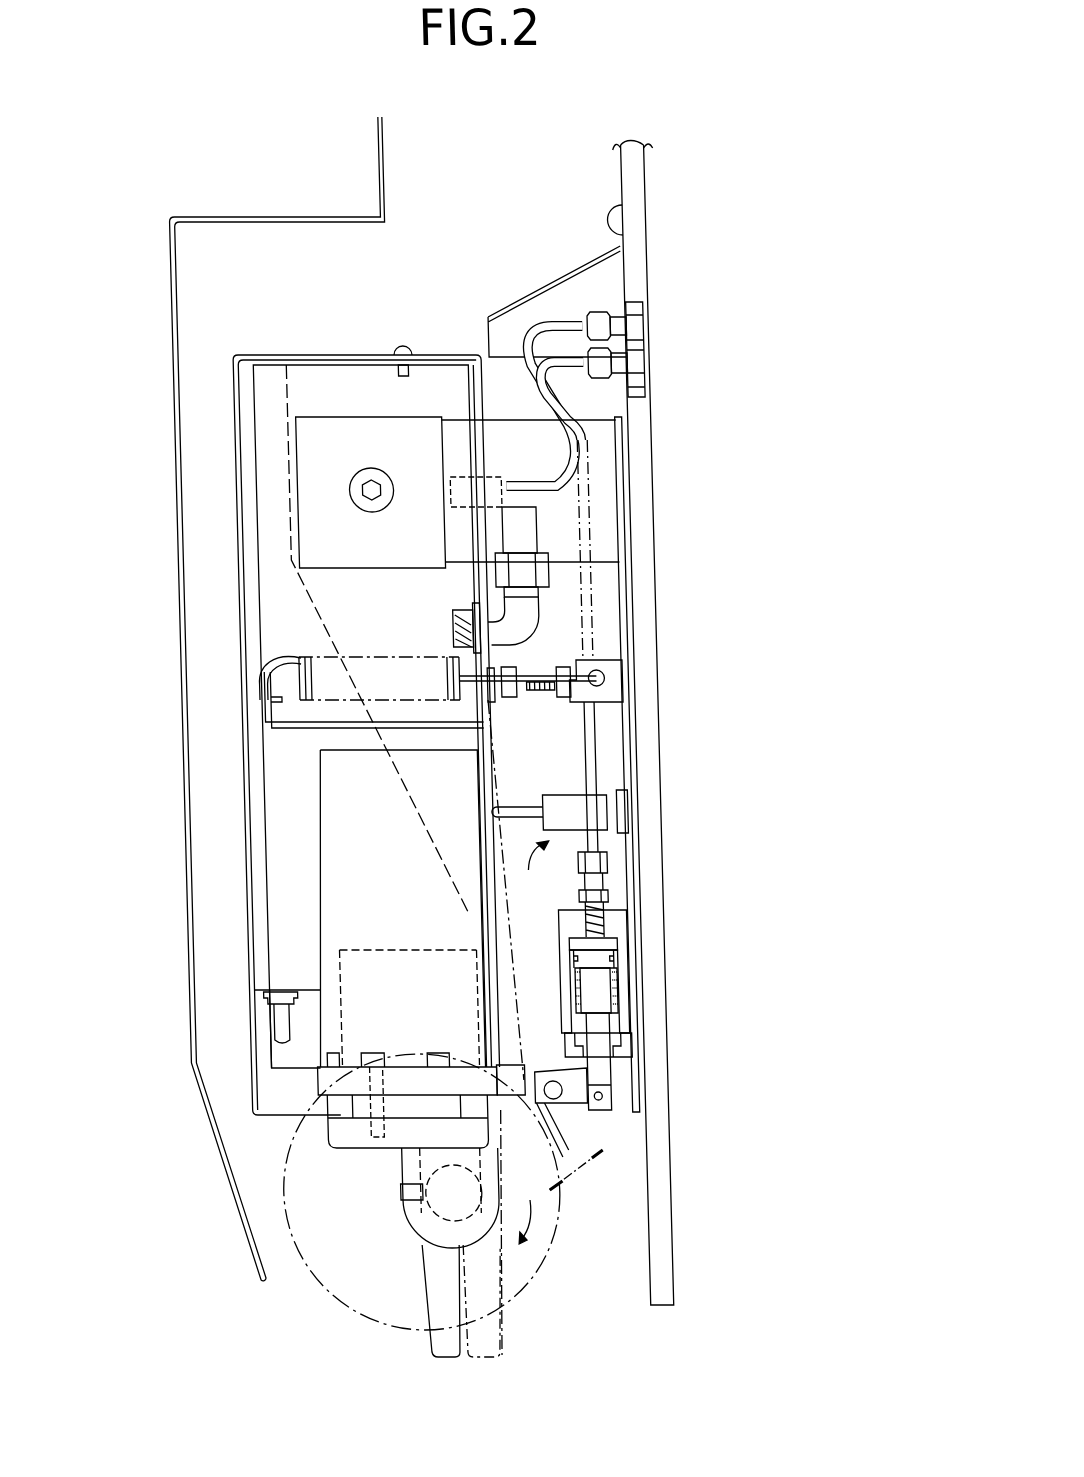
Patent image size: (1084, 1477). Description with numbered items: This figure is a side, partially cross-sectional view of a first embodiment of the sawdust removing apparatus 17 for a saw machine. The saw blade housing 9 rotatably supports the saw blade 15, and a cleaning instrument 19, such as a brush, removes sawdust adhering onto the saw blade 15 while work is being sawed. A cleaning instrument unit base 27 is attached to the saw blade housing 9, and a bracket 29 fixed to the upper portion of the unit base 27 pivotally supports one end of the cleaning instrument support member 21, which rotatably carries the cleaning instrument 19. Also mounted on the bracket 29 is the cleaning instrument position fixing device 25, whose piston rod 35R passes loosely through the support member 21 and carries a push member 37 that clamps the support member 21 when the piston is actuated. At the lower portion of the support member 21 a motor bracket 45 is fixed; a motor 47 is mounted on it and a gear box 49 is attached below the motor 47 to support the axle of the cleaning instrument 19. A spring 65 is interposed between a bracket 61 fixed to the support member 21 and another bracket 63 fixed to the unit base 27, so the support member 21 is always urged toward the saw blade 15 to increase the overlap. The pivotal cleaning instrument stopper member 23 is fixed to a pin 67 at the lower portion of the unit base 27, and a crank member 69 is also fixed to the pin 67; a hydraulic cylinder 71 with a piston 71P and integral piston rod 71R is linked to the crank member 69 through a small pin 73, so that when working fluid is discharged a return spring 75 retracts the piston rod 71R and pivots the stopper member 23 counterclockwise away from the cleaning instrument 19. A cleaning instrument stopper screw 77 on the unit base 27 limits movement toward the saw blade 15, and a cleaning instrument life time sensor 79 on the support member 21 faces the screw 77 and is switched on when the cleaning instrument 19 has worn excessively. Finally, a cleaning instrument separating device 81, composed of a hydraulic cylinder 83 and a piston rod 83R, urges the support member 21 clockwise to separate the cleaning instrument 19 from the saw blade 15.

The saw blade housing 9 is at (630, 178).
The saw blade 15 is at (560, 1205).
The sawdust removing apparatus 17 is at (212, 990).
The cleaning instrument 19 is at (303, 1288).
The cleaning instrument support member 21 is at (249, 552).
The pivotal cleaning instrument stopper member 23 is at (560, 1182).
The cleaning instrument position fixing device 25 is at (323, 412).
The cleaning instrument unit base 27 is at (632, 570).
The bracket 29 is at (612, 452).
The piston rod 35R is at (377, 468).
The push member 37 is at (306, 482).
The motor bracket 45 is at (315, 1078).
The motor 47 is at (330, 822).
The gear box 49 is at (389, 1215).
The bracket 61 is at (287, 724).
The bracket 63 is at (606, 697).
The spring 65 is at (302, 658).
The pin 67 is at (539, 1080).
The crank member 69 is at (565, 1104).
The hydraulic cylinder 71 is at (618, 917).
The piston 71P is at (600, 955).
The piston rod 71R is at (588, 1067).
The small pin 73 is at (598, 1093).
The return spring 75 is at (598, 990).
The cleaning instrument stopper screw 77 is at (511, 690).
The cleaning instrument life time sensor 79 is at (488, 700).
The cleaning instrument separating device 81 is at (535, 874).
The hydraulic cylinder 83 is at (603, 810).
The piston rod 83R is at (490, 815).